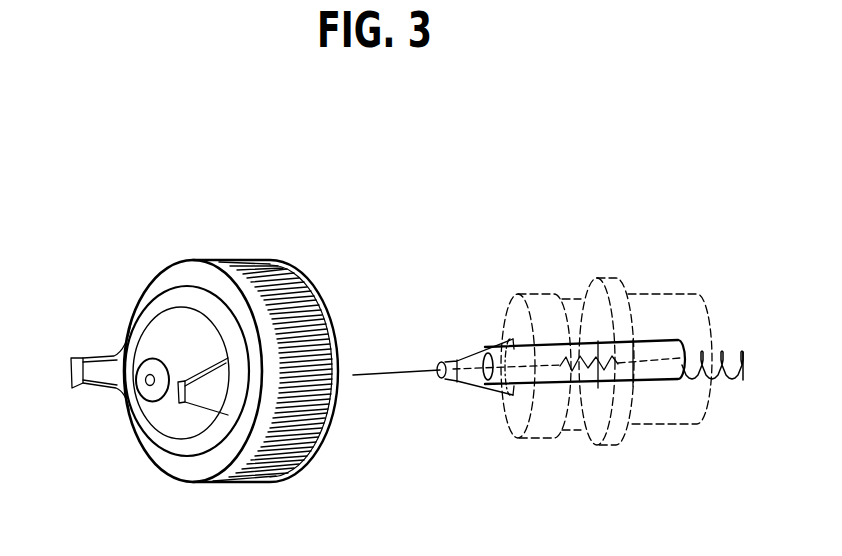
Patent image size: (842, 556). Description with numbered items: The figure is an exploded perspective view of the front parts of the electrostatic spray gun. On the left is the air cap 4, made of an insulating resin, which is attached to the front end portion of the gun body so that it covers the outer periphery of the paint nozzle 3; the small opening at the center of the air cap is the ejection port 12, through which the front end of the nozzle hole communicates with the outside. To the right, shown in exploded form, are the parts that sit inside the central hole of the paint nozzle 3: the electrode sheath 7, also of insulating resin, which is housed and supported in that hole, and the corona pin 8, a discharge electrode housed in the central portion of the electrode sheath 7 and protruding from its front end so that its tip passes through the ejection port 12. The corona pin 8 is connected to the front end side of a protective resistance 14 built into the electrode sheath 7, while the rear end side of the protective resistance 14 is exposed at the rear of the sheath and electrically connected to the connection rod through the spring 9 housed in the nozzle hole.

The paint nozzle 3 is at (602, 280).
The air cap 4 is at (193, 266).
The electrode sheath 7 is at (585, 386).
The corona pin 8 is at (393, 370).
The spring 9 is at (722, 353).
The ejection port 12 is at (148, 385).
The protective resistance 14 is at (578, 318).